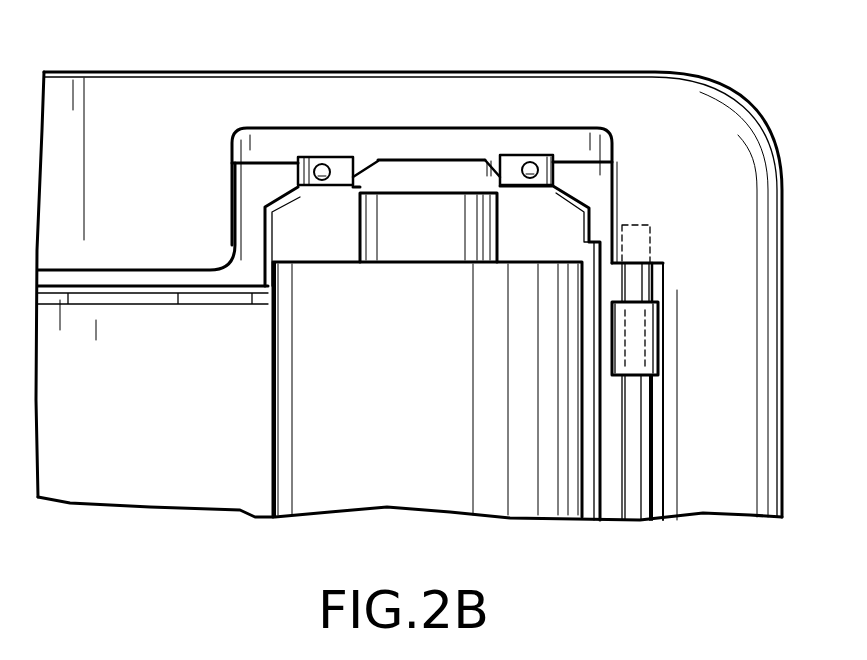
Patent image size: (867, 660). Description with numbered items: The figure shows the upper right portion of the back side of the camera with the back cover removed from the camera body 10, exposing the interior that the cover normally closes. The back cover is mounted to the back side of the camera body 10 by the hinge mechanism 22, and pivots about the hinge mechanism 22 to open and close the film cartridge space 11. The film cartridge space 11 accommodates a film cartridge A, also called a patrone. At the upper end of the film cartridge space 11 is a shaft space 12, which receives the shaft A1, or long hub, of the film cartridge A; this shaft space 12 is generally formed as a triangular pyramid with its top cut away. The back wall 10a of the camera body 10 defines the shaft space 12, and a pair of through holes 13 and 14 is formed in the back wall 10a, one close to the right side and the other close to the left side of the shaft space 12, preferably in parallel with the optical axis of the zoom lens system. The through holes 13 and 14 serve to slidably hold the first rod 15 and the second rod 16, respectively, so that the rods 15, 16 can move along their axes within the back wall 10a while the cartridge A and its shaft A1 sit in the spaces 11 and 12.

The camera body 10 is at (228, 100).
The back wall 10a is at (420, 145).
The film cartridge space 11 is at (273, 458).
The shaft space 12 is at (298, 248).
The through hole 13 is at (322, 181).
The through hole 14 is at (532, 183).
The first rod 15 is at (320, 165).
The second rod 16 is at (527, 160).
The hinge mechanism 22 is at (650, 245).
The film cartridge A is at (330, 400).
The shaft A1 is at (480, 233).